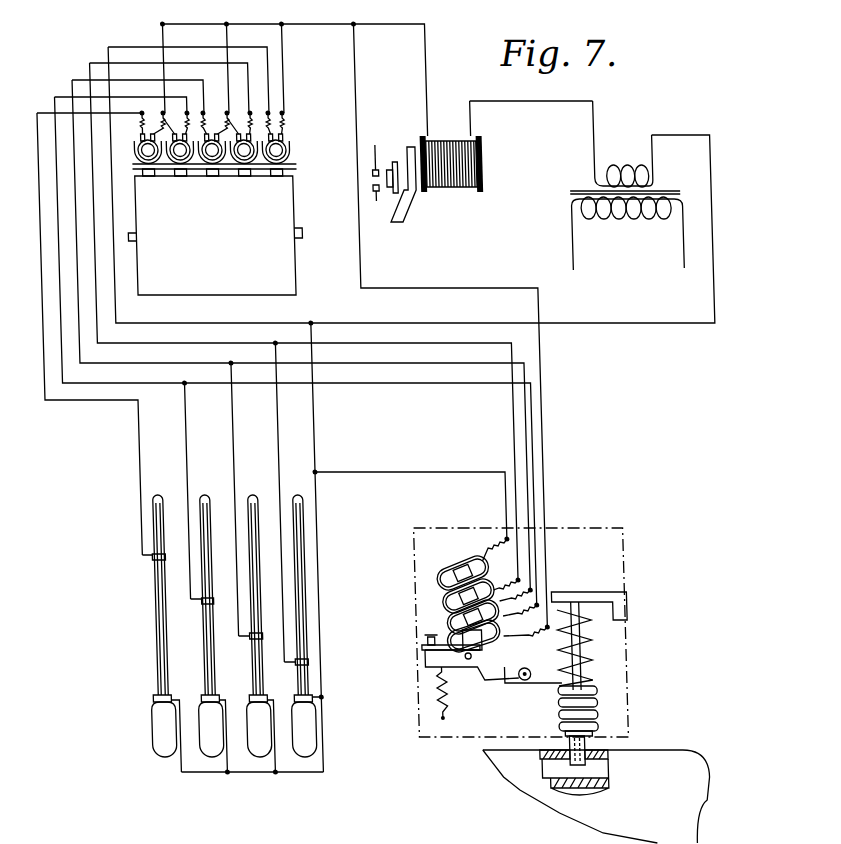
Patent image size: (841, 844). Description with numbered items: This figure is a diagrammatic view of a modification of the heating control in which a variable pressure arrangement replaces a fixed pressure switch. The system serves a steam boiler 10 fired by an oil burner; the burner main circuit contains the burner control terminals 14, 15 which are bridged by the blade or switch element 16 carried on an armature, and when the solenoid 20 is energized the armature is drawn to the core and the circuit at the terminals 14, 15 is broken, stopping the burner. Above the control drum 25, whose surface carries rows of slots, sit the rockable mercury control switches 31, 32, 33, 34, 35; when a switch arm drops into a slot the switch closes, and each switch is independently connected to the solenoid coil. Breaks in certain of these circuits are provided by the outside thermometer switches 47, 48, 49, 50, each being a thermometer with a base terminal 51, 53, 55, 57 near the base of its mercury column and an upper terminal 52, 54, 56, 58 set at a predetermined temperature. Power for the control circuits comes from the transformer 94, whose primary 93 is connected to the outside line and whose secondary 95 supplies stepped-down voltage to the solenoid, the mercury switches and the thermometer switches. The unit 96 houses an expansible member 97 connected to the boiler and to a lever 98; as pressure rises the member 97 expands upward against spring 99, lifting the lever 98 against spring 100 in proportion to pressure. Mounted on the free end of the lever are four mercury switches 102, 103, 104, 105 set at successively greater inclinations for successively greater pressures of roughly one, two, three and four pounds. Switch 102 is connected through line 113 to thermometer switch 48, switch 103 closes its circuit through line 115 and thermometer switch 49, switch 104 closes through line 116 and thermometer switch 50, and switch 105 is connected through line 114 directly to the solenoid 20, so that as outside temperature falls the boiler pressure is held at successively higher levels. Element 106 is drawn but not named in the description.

The steam boiler 10 is at (679, 742).
The burner control terminal 14 is at (380, 190).
The burner control terminal 15 is at (379, 173).
The blade or switch element 16 is at (396, 195).
The solenoid 20 is at (459, 145).
The drum 25 is at (309, 267).
The mercury control switch 31 is at (152, 153).
The mercury control switch 32 is at (189, 157).
The mercury control switch 33 is at (230, 160).
The mercury control switch 34 is at (259, 162).
The mercury control switch 35 is at (296, 150).
The thermometer switch 47 is at (144, 669).
The thermometer switch 48 is at (191, 660).
The thermometer switch 49 is at (239, 673).
The thermometer switch 50 is at (283, 684).
The base terminal 51 is at (145, 698).
The upper terminal 52 is at (145, 559).
The base terminal 53 is at (195, 698).
The upper terminal 54 is at (195, 604).
The base terminal 55 is at (242, 698).
The upper terminal 56 is at (243, 640).
The base terminal 57 is at (304, 696).
The upper terminal 58 is at (302, 663).
The primary 93 is at (630, 220).
The transformer 94 is at (679, 185).
The secondary 95 is at (645, 166).
The unit 96 is at (626, 560).
The expansible member 97 is at (590, 708).
The lever 98 is at (487, 687).
The spring 99 is at (586, 648).
The spring 100 is at (429, 700).
The mercury switch 102 is at (493, 645).
The mercury switch 103 is at (441, 616).
The mercury switch 104 is at (438, 597).
The mercury switch 105 is at (440, 572).
The armature 106 is at (417, 670).
The line 113 is at (364, 384).
The line 114 is at (370, 471).
The line 115 is at (446, 362).
The line 116 is at (377, 343).